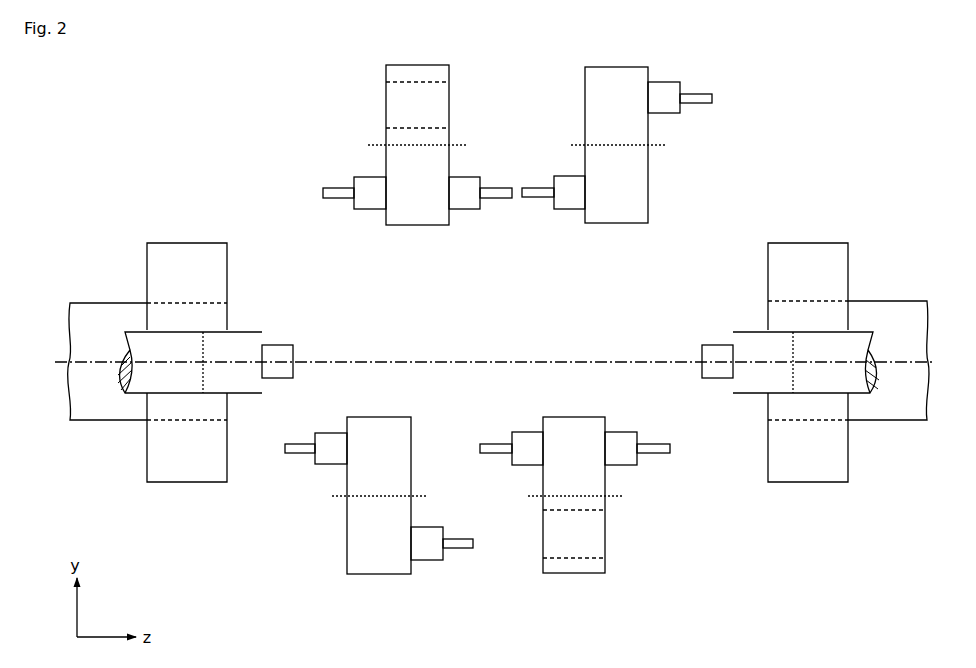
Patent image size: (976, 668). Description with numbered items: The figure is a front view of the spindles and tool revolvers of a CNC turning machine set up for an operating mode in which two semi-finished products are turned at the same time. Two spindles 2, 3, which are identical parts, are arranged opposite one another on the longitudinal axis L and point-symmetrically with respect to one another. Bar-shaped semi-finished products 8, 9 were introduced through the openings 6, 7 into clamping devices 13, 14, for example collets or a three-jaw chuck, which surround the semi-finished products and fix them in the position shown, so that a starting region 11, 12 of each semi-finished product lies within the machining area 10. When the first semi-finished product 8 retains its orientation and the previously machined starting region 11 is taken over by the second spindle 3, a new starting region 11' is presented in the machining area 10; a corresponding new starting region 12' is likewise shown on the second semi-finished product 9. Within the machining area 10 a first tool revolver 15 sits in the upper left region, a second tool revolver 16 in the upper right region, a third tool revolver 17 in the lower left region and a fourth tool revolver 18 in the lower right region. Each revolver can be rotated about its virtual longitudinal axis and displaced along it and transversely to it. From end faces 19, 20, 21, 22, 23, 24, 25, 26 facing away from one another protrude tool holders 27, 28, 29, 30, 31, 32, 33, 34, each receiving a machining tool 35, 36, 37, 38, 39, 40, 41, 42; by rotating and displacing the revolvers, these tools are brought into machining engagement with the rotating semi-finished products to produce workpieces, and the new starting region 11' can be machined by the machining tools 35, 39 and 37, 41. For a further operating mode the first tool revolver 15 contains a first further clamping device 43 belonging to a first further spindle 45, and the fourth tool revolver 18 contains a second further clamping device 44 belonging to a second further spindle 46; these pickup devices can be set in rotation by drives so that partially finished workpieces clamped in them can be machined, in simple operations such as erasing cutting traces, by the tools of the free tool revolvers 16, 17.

The spindle 2 is at (178, 232).
The spindle 3 is at (819, 232).
The opening 6 is at (92, 322).
The opening 7 is at (905, 322).
The semi-finished product 8 is at (245, 345).
The semi-finished product 9 is at (748, 345).
The machining area 10 is at (442, 341).
The starting region 11 is at (297, 339).
The new starting region 11' is at (156, 399).
The starting region 12 is at (695, 338).
The second rotational direction 12' is at (836, 399).
The clamping device 13 is at (167, 320).
The clamping device 14 is at (828, 320).
The first tool revolver 15 is at (356, 62).
The second tool revolver 16 is at (573, 81).
The third tool revolver 17 is at (337, 556).
The fourth tool revolver 18 is at (638, 563).
The end face 19 is at (385, 154).
The end face 20 is at (452, 112).
The end face 21 is at (583, 104).
The end face 22 is at (650, 196).
The end face 23 is at (346, 512).
The end face 24 is at (413, 437).
The end face 25 is at (542, 501).
The end face 26 is at (608, 543).
The tool holder 27 is at (370, 199).
The tool holder 28 is at (465, 199).
The tool holder 29 is at (570, 199).
The tool holder 30 is at (664, 93).
The tool holder 31 is at (330, 445).
The tool holder 32 is at (425, 551).
The tool holder 33 is at (527, 445).
The tool holder 34 is at (622, 445).
The machining tool 35 is at (338, 194).
The machining tool 36 is at (498, 194).
The machining tool 37 is at (538, 193).
The machining tool 38 is at (697, 98).
The machining tool 39 is at (295, 447).
The machining tool 40 is at (452, 543).
The machining tool 41 is at (490, 447).
The machining tool 42 is at (655, 447).
The first further clamping device 43 is at (398, 103).
The second further clamping device 44 is at (570, 527).
The first further spindle 45 is at (379, 92).
The second further spindle 46 is at (539, 546).